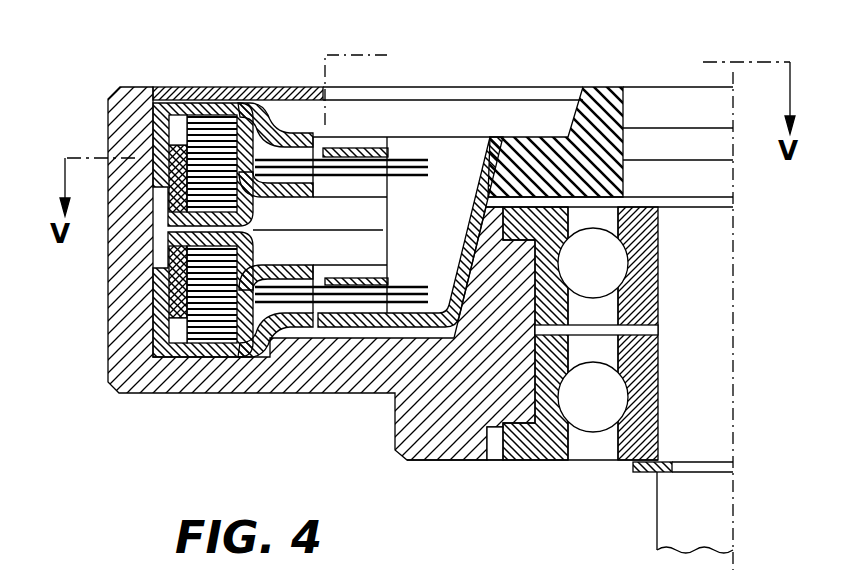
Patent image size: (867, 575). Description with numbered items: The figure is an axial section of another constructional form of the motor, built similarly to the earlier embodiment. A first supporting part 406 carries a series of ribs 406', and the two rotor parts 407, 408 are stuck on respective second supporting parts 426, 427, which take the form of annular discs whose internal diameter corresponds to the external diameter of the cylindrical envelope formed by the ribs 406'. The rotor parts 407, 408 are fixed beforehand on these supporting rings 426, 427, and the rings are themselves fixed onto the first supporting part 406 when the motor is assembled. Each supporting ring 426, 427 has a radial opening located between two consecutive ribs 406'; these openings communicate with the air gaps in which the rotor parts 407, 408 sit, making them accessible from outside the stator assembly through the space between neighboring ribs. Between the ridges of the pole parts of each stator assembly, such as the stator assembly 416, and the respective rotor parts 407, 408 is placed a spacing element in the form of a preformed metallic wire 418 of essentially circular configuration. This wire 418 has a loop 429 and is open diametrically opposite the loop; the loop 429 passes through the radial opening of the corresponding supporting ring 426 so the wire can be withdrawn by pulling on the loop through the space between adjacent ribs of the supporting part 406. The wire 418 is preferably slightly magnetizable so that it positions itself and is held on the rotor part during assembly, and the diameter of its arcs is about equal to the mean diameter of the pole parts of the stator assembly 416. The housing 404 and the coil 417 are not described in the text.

The housing 404 is at (167, 383).
The first supporting part 406 is at (610, 114).
The ribs 406' is at (448, 98).
The rotor part 407 is at (270, 125).
The rotor part 408 is at (270, 335).
The stator assembly 416 is at (158, 239).
The coil 417 is at (205, 100).
The preformed metallic wire 418 is at (302, 118).
The second supporting part 426 is at (360, 150).
The second supporting part 427 is at (355, 287).
The loop 429 is at (410, 178).